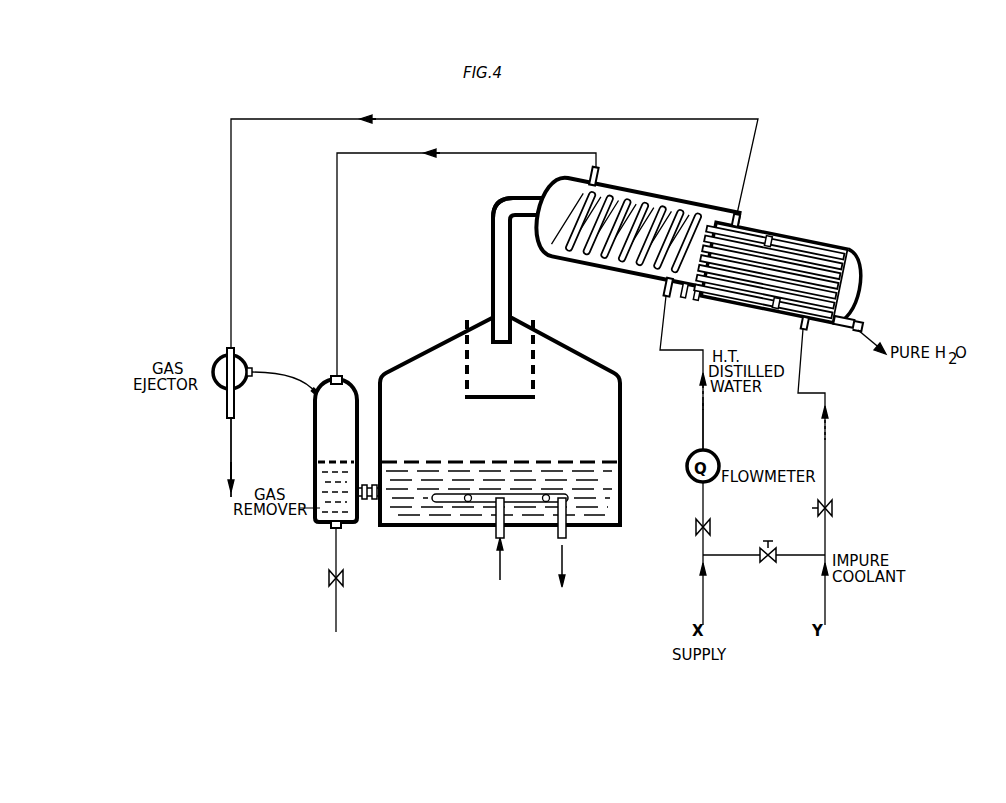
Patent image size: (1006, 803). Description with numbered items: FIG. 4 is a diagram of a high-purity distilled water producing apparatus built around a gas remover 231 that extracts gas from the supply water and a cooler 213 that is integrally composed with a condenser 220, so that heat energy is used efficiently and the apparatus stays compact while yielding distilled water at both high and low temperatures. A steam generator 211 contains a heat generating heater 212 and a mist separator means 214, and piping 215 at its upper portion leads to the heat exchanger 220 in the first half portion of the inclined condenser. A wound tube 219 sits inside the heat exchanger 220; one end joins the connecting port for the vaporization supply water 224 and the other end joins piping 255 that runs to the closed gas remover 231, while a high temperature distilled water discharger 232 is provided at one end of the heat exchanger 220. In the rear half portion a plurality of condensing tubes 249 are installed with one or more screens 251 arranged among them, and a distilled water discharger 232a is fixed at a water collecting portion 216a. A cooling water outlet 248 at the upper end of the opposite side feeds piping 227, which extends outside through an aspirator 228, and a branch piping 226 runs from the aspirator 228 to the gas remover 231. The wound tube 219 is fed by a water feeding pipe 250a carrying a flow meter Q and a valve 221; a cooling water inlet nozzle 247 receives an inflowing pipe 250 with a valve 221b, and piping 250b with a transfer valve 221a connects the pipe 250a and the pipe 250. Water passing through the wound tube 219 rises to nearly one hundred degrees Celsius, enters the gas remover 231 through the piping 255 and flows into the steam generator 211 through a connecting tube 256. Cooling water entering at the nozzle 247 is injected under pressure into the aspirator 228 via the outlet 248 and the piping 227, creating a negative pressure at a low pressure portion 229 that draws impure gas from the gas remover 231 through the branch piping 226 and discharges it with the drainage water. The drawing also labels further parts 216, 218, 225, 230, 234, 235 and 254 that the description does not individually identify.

The steam generator 211 is at (446, 440).
The heat generating heater 212 is at (458, 500).
The cooler 213 is at (789, 253).
The mist separator means 214 is at (466, 352).
The piping 215 is at (492, 295).
The conduit 216 is at (699, 318).
The water collecting portion 216a is at (864, 353).
The vapor conduit 218 is at (518, 180).
The wound tube 219 is at (630, 205).
The heat exchanger 220 is at (638, 213).
The valve 221 is at (693, 527).
The transfer valve 221a is at (768, 562).
The valve 221b is at (834, 510).
The connecting port for the vaporization supply water 224 is at (636, 296).
The coolant inlet 225 is at (614, 159).
The branch piping 226 is at (299, 380).
The piping 227 is at (232, 207).
The aspirator 228 is at (236, 405).
The low pressure portion 229 is at (249, 355).
The gas remover inlet 230 is at (312, 400).
The gas remover 231 is at (350, 444).
The high temperature distilled water discharger 232 is at (703, 350).
The distilled water discharger 232a is at (889, 317).
The drain outlet 234 is at (328, 530).
The drain valve 235 is at (325, 578).
The cooling water inlet nozzle 247 is at (818, 347).
The cooling water outlet 248 is at (756, 201).
The condensing tubes 249 is at (761, 323).
The inflowing pipe 250 is at (826, 458).
The water feeding pipe 250a is at (702, 426).
The piping 250b is at (722, 555).
The screens 251 is at (792, 226).
The gas outlet 254 is at (344, 380).
The piping 255 is at (338, 188).
The connecting tube 256 is at (368, 500).